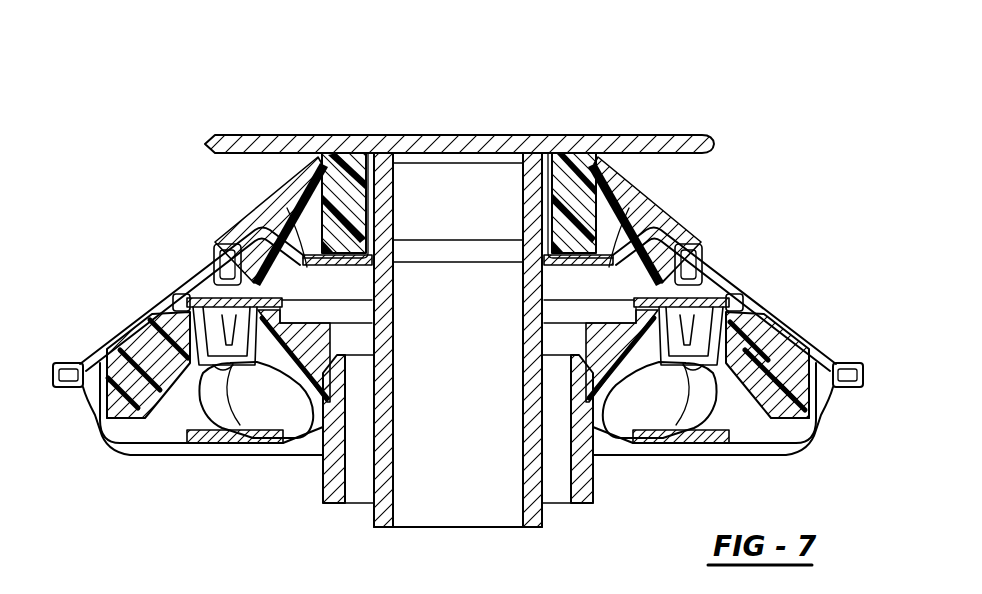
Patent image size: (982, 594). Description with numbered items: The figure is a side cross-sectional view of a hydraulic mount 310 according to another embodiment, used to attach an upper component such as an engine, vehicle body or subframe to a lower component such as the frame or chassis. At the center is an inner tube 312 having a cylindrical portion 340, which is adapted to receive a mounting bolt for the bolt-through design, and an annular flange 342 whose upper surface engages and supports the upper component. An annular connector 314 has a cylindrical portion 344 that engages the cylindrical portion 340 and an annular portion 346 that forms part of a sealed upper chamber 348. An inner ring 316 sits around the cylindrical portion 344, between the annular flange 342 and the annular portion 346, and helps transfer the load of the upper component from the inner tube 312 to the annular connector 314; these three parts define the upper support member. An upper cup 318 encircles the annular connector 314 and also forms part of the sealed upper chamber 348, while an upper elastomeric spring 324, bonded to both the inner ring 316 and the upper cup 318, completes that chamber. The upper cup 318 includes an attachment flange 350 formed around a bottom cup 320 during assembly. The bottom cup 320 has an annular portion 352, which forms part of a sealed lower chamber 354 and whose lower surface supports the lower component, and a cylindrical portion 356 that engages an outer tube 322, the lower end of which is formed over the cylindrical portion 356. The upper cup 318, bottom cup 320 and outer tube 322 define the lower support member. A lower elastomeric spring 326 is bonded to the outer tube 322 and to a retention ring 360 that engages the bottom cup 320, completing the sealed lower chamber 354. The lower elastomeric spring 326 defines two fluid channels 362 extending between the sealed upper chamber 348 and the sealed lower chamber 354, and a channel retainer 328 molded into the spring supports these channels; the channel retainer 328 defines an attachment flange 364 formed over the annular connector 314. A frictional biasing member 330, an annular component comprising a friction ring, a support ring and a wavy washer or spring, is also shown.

The mount 310 is at (726, 90).
The inner tube 312 is at (389, 528).
The annular connector 314 is at (675, 237).
The inner ring 316 is at (587, 172).
The upper cup 318 is at (800, 315).
The bottom cup 320 is at (790, 447).
The outer tube 322 is at (583, 497).
The upper elastomeric spring 324 is at (617, 213).
The lower elastomeric spring 326 is at (831, 360).
The channel retainer 328 is at (697, 323).
The frictional biasing member 330 is at (196, 396).
The cylindrical portion 340 is at (398, 338).
The annular flange 342 is at (272, 150).
The cylindrical portion 344 is at (394, 198).
The annular portion 346 is at (287, 208).
The sealed upper chamber 348 is at (273, 283).
The attachment flange 350 is at (63, 363).
The annular portion 352 is at (217, 456).
The sealed lower chamber 354 is at (150, 405).
The cylindrical portion 356 is at (320, 473).
The retention ring 360 is at (824, 398).
The fluid channel 362 is at (713, 258).
The attachment flange 364 is at (168, 297).